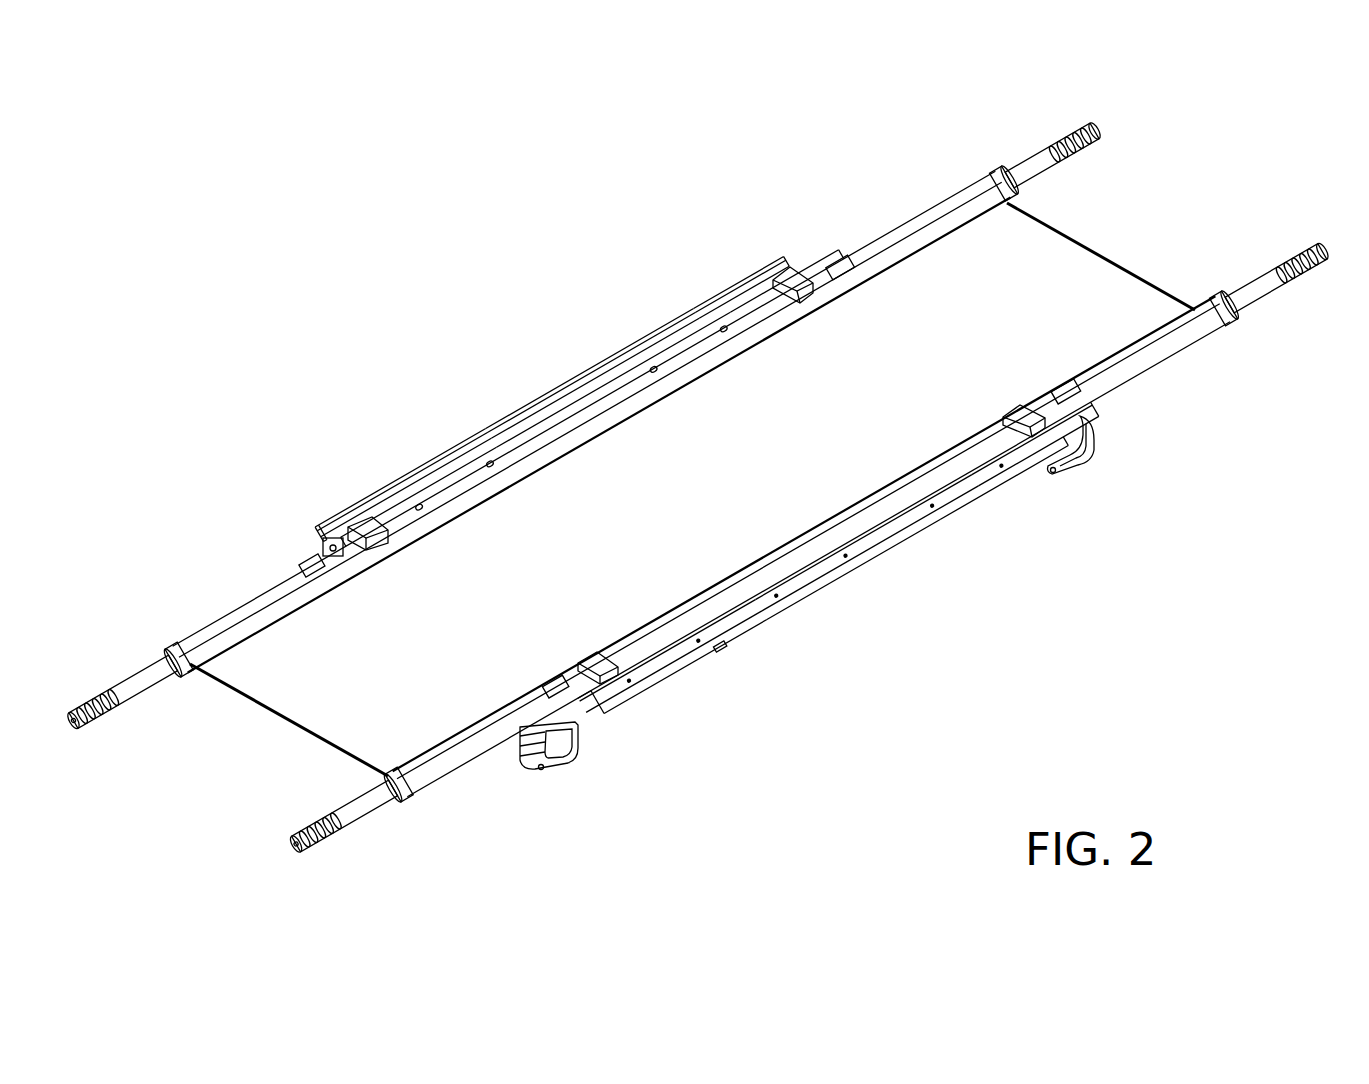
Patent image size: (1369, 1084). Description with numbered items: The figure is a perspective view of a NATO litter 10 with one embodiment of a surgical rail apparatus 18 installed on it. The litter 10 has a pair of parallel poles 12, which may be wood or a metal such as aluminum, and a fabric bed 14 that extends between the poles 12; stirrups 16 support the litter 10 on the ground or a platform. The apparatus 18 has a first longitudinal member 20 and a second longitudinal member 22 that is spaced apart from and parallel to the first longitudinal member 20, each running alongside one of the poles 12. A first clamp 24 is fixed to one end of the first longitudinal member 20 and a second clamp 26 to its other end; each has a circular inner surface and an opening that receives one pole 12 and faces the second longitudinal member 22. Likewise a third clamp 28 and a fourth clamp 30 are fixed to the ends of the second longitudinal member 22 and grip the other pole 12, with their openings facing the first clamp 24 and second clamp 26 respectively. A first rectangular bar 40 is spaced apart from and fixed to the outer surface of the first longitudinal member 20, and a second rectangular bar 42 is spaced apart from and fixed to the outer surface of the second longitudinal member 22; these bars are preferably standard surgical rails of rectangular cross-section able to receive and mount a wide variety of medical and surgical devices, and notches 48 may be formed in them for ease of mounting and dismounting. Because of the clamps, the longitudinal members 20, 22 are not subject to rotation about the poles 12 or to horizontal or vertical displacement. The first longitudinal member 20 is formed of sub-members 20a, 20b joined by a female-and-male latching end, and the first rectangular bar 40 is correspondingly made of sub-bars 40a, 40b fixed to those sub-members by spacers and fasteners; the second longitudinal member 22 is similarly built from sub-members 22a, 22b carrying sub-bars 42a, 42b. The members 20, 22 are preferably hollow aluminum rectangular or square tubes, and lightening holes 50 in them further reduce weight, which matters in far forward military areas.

The NATO litter 10 is at (420, 830).
The parallel poles 12 is at (1028, 163).
The bed 14 is at (345, 697).
The stirrups 16 is at (550, 763).
The surgical rail apparatus 18 is at (857, 630).
The first longitudinal member 20 is at (495, 448).
The sub-member 20a is at (452, 472).
The sub-member 20b is at (703, 323).
The second longitudinal member 22 is at (768, 590).
The sub-member 22a is at (648, 660).
The sub-member 22b is at (1015, 450).
The first clamp 24 is at (362, 515).
The second clamp 26 is at (790, 283).
The third clamp 28 is at (598, 650).
The fourth clamp 30 is at (1010, 400).
The first rectangular bar 40 is at (632, 355).
The sub-bar 40a is at (320, 530).
The sub-bar 40b is at (748, 280).
The second rectangular bar 42 is at (893, 548).
The sub-bar 42a is at (640, 690).
The sub-bar 42b is at (987, 493).
The notches 48 is at (722, 655).
The lightening holes 50 is at (420, 508).